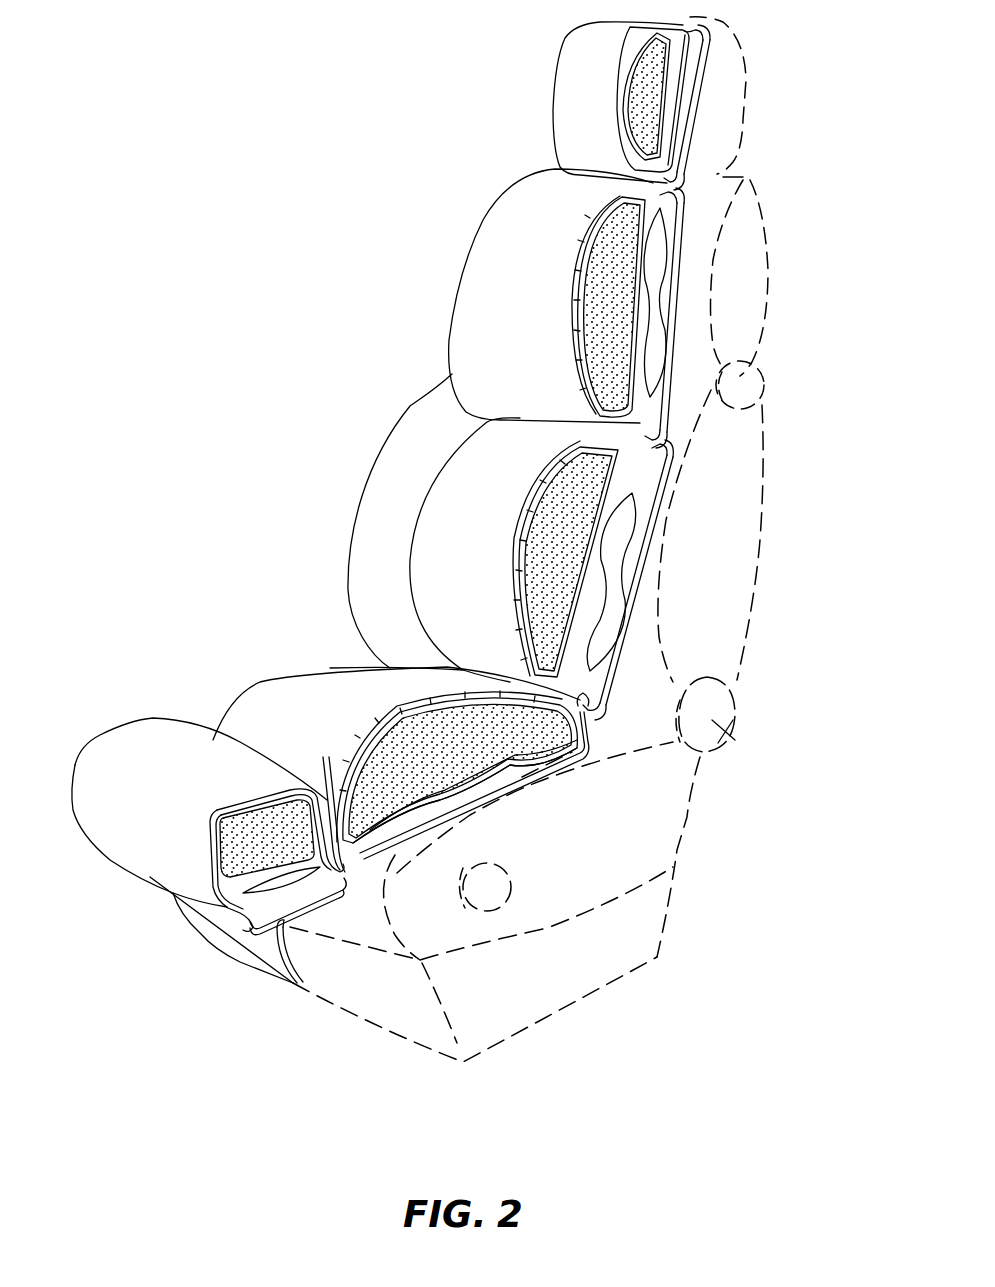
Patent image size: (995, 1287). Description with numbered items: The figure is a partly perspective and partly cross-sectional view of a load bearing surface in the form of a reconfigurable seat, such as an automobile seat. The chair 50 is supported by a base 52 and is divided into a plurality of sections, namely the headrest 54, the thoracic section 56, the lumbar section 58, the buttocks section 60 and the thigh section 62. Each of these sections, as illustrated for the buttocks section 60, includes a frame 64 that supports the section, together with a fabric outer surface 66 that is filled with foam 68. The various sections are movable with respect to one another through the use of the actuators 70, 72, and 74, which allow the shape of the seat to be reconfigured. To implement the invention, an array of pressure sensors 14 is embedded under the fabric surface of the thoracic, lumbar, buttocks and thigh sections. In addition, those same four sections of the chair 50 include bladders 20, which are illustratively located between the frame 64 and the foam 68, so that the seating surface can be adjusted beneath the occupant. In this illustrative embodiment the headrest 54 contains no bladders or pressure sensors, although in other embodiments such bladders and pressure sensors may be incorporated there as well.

The pressure sensors 14 is at (333, 767).
The bladders 20 is at (657, 305).
The chair 50 is at (793, 550).
The base 52 is at (223, 937).
The headrest 54 is at (549, 88).
The thoracic section 56 is at (468, 262).
The lumbar section 58 is at (423, 567).
The buttocks section 60 is at (273, 680).
The thigh section 62 is at (97, 733).
The frame 64 is at (490, 787).
The fabric outer surface 66 is at (368, 706).
The foam 68 is at (450, 764).
The actuator 70 is at (743, 383).
The actuator 72 is at (723, 733).
The actuator 74 is at (487, 900).